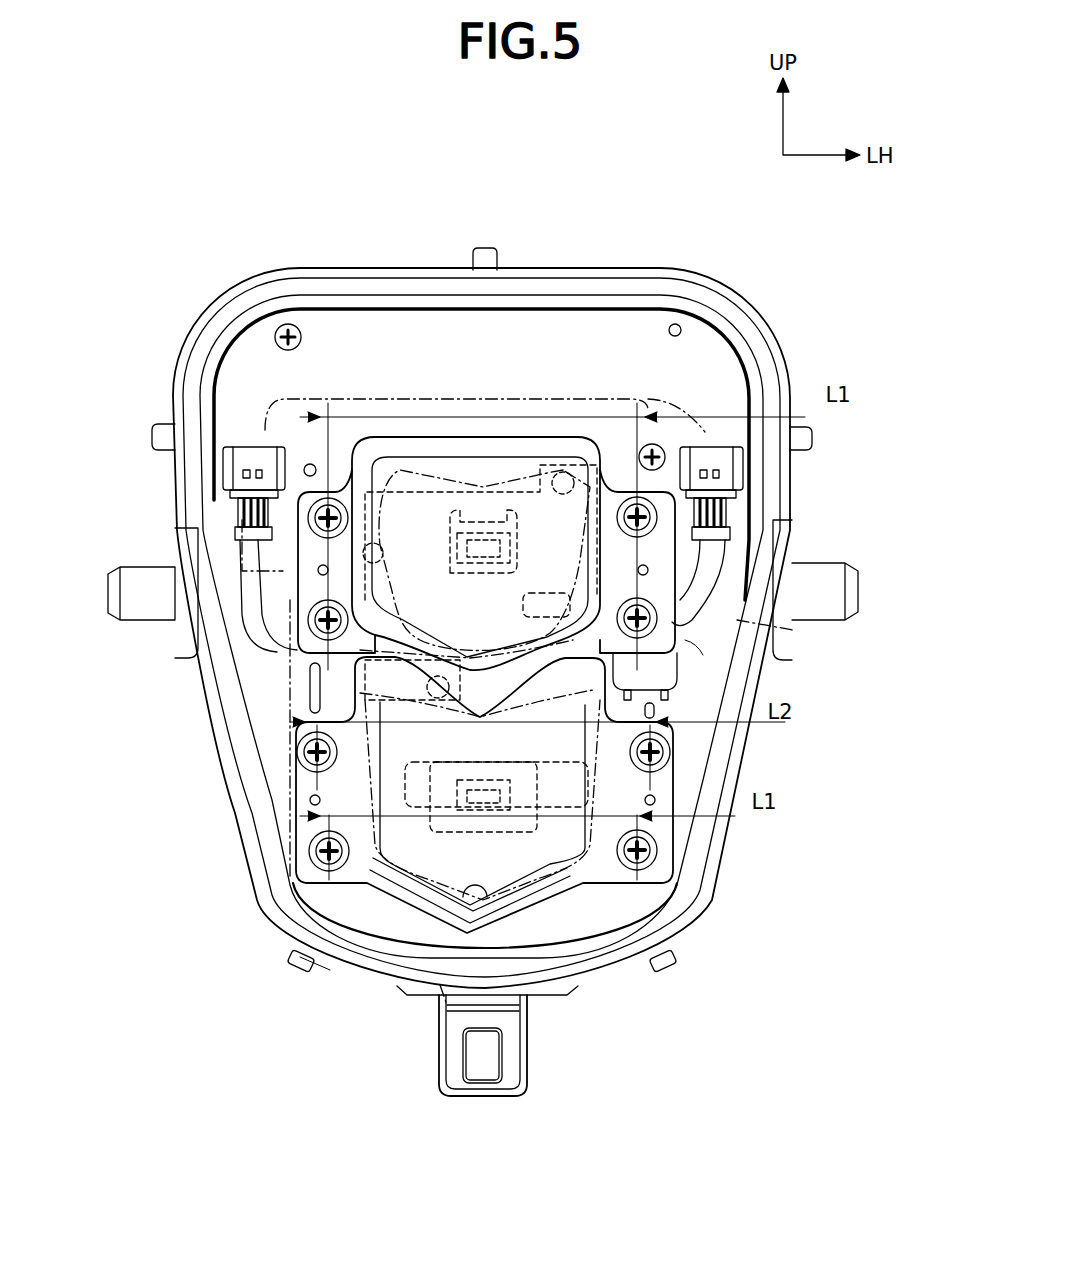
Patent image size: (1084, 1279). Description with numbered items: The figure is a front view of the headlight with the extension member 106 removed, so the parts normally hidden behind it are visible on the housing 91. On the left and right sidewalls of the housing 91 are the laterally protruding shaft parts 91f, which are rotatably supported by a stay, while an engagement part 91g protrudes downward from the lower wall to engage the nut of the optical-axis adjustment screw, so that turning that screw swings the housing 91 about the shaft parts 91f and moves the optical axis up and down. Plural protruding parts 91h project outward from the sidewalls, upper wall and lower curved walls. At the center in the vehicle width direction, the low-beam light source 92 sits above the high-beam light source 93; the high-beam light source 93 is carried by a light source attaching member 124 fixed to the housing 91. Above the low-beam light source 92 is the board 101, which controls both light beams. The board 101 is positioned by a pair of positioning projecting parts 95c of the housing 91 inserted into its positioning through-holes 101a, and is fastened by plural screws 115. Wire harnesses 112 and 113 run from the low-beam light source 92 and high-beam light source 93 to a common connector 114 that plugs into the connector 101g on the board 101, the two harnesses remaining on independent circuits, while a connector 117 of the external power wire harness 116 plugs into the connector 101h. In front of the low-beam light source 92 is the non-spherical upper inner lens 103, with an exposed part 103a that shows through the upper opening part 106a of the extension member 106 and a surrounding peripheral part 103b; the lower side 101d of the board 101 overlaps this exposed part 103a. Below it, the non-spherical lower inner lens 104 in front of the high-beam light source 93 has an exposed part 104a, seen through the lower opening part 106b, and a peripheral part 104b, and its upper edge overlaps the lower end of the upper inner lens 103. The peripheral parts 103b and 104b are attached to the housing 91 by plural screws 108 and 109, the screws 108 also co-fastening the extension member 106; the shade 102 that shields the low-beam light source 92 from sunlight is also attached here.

The housing 91 is at (214, 290).
The shaft part 91f is at (140, 605).
The engagement part 91g is at (481, 1097).
The protruding part 91h is at (485, 247).
The low-beam light source 92 is at (488, 510).
The high-beam light source 93 is at (556, 996).
The projecting part for positioning 95c is at (300, 430).
The board 101 is at (420, 342).
The through-hole for positioning 101a is at (242, 452).
The lower side of the board 101d is at (335, 440).
The connector 101g is at (709, 452).
The connector 101h is at (305, 465).
The shade 102 is at (398, 462).
The upper inner lens 103 is at (454, 432).
The exposed part 103a is at (548, 468).
The peripheral part 103b is at (681, 326).
The lower inner lens 104 is at (386, 900).
The exposed part 104a is at (428, 897).
The peripheral part 104b is at (362, 868).
The extension member 106 is at (265, 396).
The upper opening part 106a is at (740, 622).
The lower opening part 106b is at (446, 1003).
The screw 108 is at (310, 520).
The screw 109 is at (300, 635).
The wire harness 112 is at (703, 556).
The wire harness 113 is at (683, 645).
The connector 114 is at (736, 494).
The screw 115 is at (283, 325).
The wire harness 116 is at (255, 622).
The connector 117 is at (238, 512).
The light source attaching member 124 is at (602, 968).